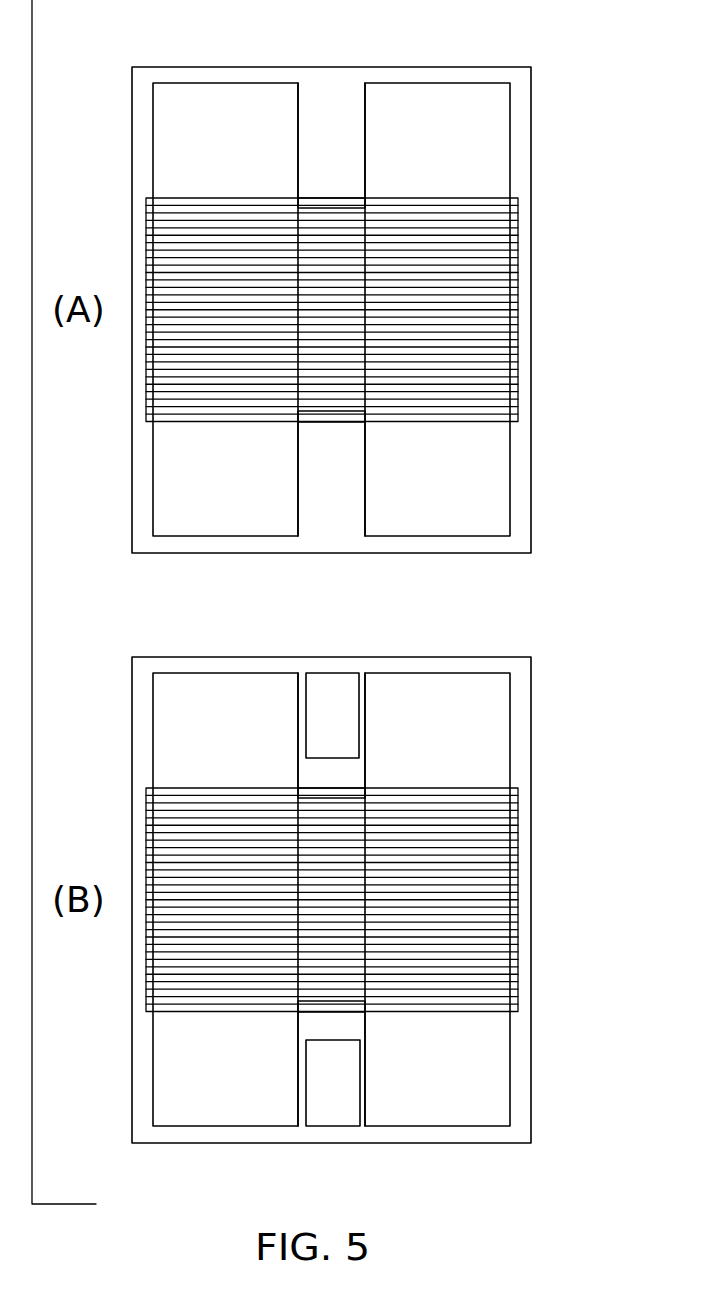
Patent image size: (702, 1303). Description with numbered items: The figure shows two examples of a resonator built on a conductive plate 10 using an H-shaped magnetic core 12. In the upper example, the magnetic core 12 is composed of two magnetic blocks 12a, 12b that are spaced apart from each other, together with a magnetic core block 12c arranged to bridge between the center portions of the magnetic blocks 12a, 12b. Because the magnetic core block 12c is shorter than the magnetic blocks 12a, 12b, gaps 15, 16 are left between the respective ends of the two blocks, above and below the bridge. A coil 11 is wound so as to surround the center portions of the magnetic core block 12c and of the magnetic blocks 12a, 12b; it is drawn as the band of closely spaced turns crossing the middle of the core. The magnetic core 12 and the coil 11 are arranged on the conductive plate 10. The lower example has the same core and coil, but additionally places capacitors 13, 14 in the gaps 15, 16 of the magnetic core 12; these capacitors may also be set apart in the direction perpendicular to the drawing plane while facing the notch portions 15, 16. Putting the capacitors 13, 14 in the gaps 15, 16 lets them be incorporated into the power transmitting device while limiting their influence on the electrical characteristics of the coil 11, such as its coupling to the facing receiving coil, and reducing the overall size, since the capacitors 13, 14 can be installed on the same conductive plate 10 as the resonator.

The conductive plate 10 is at (512, 57).
The coil 11 is at (518, 264).
The magnetic core 12 is at (331, 564).
The magnetic block 12a is at (239, 83).
The magnetic block 12b is at (452, 83).
The magnetic core block 12c is at (334, 208).
The capacitor 13 is at (333, 673).
The capacitor 14 is at (333, 1128).
The gap 15 is at (353, 178).
The gap 16 is at (353, 440).